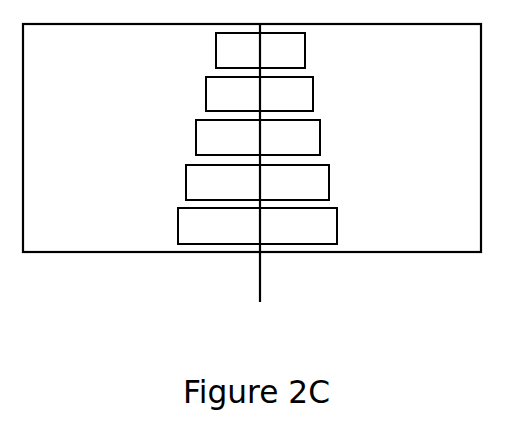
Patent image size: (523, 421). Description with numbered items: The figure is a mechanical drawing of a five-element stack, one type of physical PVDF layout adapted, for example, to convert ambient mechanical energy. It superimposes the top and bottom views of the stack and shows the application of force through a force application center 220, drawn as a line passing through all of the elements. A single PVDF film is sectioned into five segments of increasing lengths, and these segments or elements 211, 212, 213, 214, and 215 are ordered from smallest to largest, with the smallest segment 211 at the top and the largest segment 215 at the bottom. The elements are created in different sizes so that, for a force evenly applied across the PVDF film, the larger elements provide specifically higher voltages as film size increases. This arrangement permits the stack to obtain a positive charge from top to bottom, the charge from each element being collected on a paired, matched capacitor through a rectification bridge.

The segment 211 is at (293, 50).
The segment 212 is at (289, 94).
The segment 213 is at (287, 137).
The segment 214 is at (286, 182).
The segment 215 is at (287, 226).
The force application center 220 is at (292, 165).